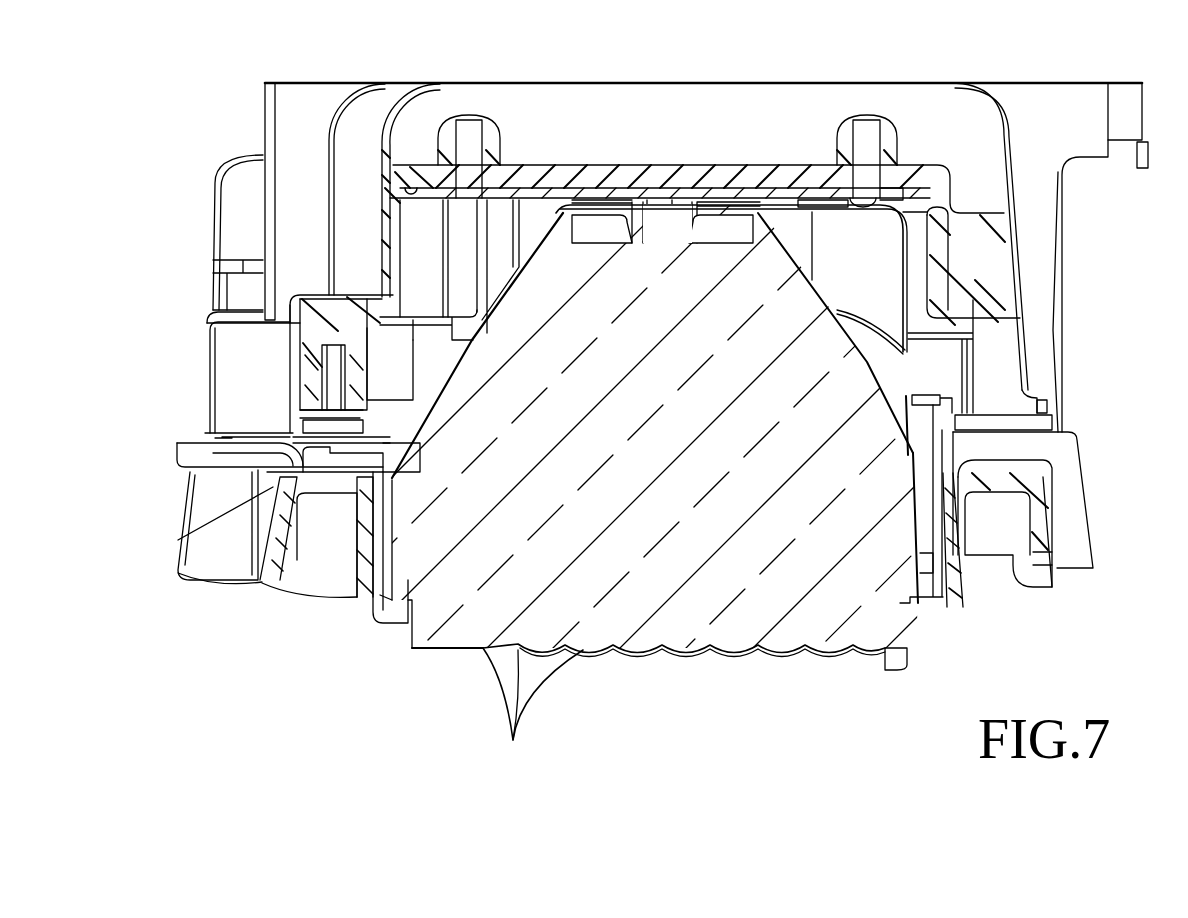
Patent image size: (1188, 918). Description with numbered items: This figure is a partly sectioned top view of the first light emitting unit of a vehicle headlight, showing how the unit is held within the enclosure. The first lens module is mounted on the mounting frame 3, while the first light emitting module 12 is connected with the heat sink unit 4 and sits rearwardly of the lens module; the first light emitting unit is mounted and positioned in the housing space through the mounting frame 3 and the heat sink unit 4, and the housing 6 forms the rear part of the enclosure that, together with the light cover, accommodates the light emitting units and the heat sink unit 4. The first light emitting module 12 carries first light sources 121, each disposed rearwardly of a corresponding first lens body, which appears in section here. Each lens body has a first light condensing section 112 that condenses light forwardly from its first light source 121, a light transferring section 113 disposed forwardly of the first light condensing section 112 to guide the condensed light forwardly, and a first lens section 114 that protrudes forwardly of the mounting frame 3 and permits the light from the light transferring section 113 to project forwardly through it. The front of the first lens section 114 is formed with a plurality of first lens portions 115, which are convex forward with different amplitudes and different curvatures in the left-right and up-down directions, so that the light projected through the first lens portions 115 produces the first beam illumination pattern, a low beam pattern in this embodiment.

The mounting frame 3 is at (367, 560).
The heat sink unit 4 is at (865, 108).
The housing 6 is at (237, 396).
The first light emitting module 12 is at (698, 200).
The first light condensing section 112 is at (783, 310).
The light transferring section 113 is at (845, 502).
The first lens section 114 is at (692, 660).
The first lens portions 115 is at (533, 716).
The first light source 121 is at (650, 200).